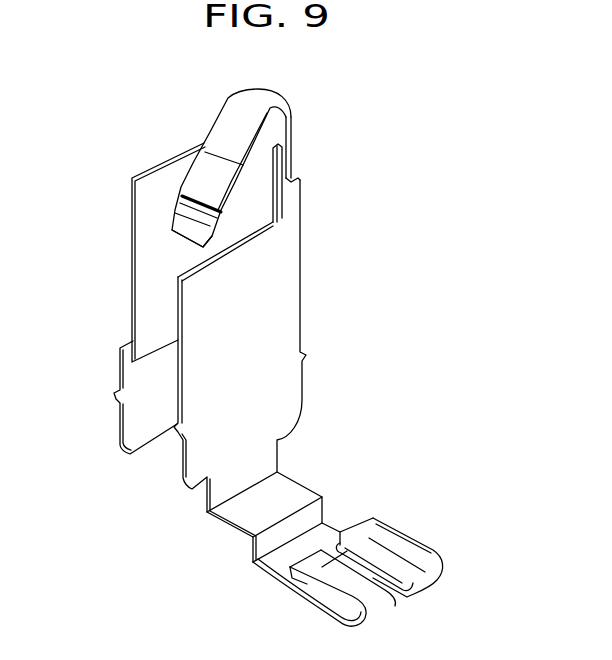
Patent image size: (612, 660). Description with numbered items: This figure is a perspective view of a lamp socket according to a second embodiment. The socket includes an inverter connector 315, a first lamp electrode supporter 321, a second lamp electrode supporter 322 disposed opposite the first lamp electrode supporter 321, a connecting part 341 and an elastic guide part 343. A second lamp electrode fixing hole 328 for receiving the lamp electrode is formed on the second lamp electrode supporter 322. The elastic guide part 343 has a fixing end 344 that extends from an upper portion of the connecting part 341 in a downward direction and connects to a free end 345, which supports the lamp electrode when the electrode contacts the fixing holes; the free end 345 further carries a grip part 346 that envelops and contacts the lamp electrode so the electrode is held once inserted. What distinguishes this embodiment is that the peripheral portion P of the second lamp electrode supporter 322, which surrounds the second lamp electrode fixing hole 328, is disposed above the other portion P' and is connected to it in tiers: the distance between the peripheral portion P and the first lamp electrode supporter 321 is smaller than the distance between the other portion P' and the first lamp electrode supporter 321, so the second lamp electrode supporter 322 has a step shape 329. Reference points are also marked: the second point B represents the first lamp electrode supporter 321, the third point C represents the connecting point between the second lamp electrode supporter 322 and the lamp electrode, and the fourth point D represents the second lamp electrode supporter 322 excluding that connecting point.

The inverter connector 315 is at (443, 568).
The first lamp electrode supporter 321 is at (282, 163).
The second lamp electrode supporter 322 is at (142, 190).
The second lamp electrode fixing hole 328 is at (222, 207).
The step shape 329 is at (118, 353).
The connecting part 341 is at (281, 125).
The elastic guide part 343 is at (223, 146).
The fixing end 344 is at (227, 113).
The free end 345 is at (200, 188).
The grip part 346 is at (177, 203).
The peripheral portion P is at (127, 149).
The other portion P' is at (91, 432).
The second point B is at (177, 302).
The third point C is at (132, 285).
The fourth point D is at (122, 430).